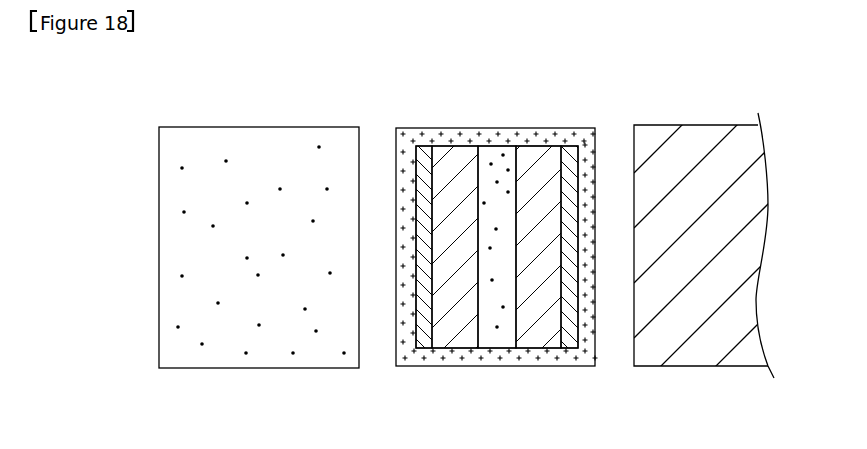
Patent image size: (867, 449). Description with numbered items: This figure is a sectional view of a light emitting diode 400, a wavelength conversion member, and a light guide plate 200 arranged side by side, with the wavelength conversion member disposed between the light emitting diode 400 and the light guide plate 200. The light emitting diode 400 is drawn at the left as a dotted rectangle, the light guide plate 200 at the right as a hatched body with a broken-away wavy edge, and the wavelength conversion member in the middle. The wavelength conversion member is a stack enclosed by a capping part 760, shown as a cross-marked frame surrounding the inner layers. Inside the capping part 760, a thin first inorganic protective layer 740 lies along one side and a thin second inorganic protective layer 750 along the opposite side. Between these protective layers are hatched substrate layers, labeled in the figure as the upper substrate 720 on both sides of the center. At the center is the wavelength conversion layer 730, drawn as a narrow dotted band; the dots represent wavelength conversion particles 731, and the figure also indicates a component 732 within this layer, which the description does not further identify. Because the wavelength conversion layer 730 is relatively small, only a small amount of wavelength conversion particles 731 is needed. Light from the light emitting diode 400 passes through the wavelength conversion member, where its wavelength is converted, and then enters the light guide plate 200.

The light emitting diode 400 is at (267, 358).
The capping part 760 is at (490, 130).
The first inorganic protective layer 740 is at (426, 345).
The upper substrate 720 is at (445, 343).
The wavelength conversion layer 730 is at (504, 285).
The separator 732 is at (491, 343).
The wavelength conversion particles 731 is at (497, 336).
The second inorganic protective layer 750 is at (575, 345).
The light guide plate 200 is at (707, 355).